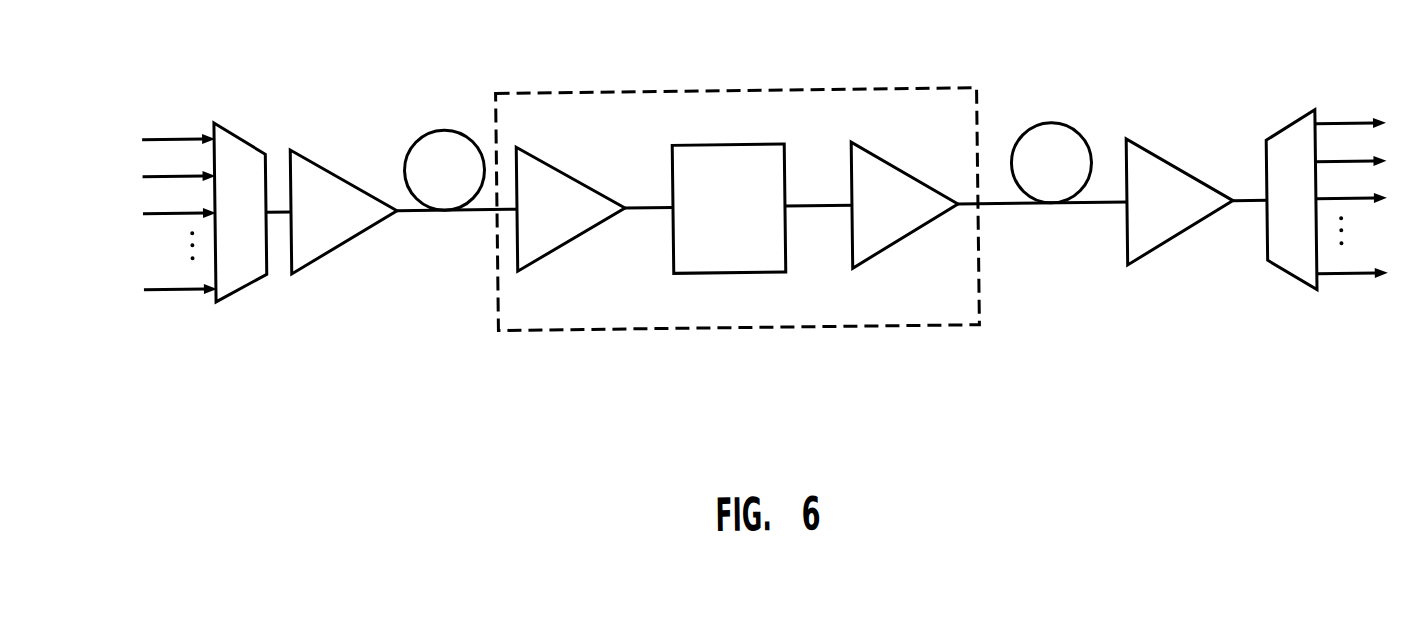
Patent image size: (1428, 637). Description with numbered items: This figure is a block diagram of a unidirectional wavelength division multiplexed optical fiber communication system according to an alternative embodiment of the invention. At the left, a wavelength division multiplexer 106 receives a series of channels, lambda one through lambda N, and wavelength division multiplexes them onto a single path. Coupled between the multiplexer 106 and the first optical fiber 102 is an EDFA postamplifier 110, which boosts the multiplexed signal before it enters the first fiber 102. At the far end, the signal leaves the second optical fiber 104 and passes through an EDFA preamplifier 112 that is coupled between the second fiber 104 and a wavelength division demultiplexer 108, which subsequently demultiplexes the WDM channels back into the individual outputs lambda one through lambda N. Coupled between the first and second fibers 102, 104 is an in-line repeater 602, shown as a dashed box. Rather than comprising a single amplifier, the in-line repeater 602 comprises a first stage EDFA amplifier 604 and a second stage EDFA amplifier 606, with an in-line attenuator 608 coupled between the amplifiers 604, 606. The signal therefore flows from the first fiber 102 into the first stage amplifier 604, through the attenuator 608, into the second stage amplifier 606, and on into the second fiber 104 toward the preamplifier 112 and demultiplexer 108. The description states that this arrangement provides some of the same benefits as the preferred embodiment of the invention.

The first optical fiber 102 is at (445, 132).
The second optical fiber 104 is at (1052, 132).
The wavelength division multiplexer 106 is at (235, 291).
The wavelength division demultiplexer 108 is at (1298, 290).
The EDFA postamplifier 110 is at (348, 226).
The EDFA preamplifier 112 is at (1184, 226).
The in-line repeater 602 is at (923, 97).
The first stage EDFA amplifier 604 is at (574, 226).
The second stage EDFA amplifier 606 is at (909, 226).
The in-line attenuator 608 is at (749, 240).